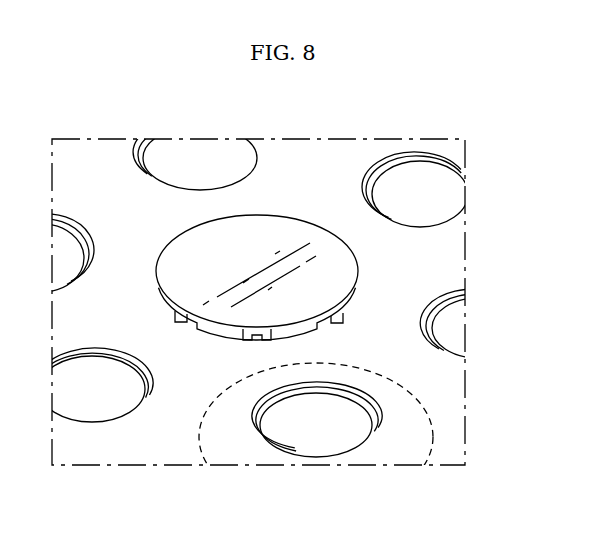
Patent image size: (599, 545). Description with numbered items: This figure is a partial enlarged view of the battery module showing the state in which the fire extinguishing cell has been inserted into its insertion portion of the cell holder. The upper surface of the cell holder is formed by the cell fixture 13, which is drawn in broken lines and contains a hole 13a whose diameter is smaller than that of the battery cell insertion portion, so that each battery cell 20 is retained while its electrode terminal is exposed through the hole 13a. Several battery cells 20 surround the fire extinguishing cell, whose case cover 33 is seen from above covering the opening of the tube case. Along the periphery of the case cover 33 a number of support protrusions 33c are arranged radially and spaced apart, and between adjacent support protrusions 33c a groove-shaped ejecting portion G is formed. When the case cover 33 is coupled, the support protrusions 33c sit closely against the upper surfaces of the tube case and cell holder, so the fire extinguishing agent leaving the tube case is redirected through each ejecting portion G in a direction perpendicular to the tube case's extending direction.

The cell fixture 13 is at (408, 438).
The hole 13a is at (340, 390).
The battery cell 20 is at (422, 188).
The case cover 33 is at (238, 305).
The support protrusion 33c is at (220, 335).
The ejecting portion G is at (187, 326).